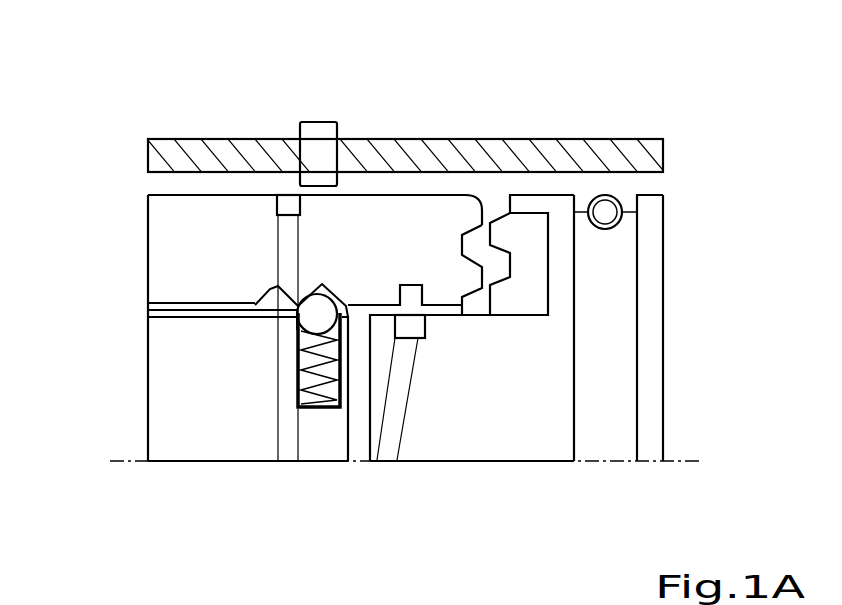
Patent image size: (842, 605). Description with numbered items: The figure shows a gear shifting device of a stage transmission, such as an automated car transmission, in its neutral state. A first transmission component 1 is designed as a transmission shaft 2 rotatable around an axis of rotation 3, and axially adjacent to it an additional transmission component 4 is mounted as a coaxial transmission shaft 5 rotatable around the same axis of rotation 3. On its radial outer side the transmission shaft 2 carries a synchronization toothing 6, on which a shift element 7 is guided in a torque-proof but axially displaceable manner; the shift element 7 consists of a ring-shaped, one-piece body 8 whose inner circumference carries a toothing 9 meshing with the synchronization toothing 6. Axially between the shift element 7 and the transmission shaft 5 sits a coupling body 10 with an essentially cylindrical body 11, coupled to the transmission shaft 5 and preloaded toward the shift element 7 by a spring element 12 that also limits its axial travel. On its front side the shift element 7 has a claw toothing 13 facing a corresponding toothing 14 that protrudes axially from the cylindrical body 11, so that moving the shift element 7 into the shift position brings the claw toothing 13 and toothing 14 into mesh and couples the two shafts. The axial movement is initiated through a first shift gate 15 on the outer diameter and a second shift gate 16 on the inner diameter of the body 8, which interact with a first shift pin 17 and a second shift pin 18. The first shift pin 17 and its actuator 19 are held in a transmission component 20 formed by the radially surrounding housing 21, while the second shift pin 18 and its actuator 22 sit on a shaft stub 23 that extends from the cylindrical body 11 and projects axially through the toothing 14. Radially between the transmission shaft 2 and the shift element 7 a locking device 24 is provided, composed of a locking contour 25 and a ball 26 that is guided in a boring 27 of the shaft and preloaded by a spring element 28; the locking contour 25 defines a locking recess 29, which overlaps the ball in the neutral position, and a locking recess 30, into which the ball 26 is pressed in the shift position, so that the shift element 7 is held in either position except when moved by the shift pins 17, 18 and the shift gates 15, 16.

The first transmission component 1 is at (146, 350).
The transmission shaft 2 is at (205, 420).
The axis of rotation 3 is at (613, 463).
The additional transmission component 4 is at (665, 232).
The transmission shaft 5 is at (647, 312).
The synchronization toothing 6 is at (185, 308).
The shift element 7 is at (146, 221).
The body 8 is at (147, 192).
The toothing 9 is at (164, 306).
The coupling body 10 is at (482, 462).
The cylindrical body 11 is at (546, 436).
The spring element 12 is at (620, 200).
The claw toothing 13 is at (470, 218).
The toothing 14 is at (507, 230).
The first shift gate 15 is at (288, 205).
The second shift gate 16 is at (423, 293).
The first shift pin 17 is at (307, 188).
The second shift pin 18 is at (440, 315).
The actuator 19 is at (323, 128).
The transmission component 20 is at (386, 136).
The housing 21 is at (596, 190).
The actuator 22 is at (427, 340).
The shaft stub 23 is at (484, 372).
The locking device 24 is at (300, 410).
The locking contour 25 is at (262, 298).
The ball 26 is at (296, 325).
The boring 27 is at (293, 362).
The spring element 28 is at (320, 412).
The locking recess 29 is at (330, 290).
The locking recess 30 is at (272, 280).